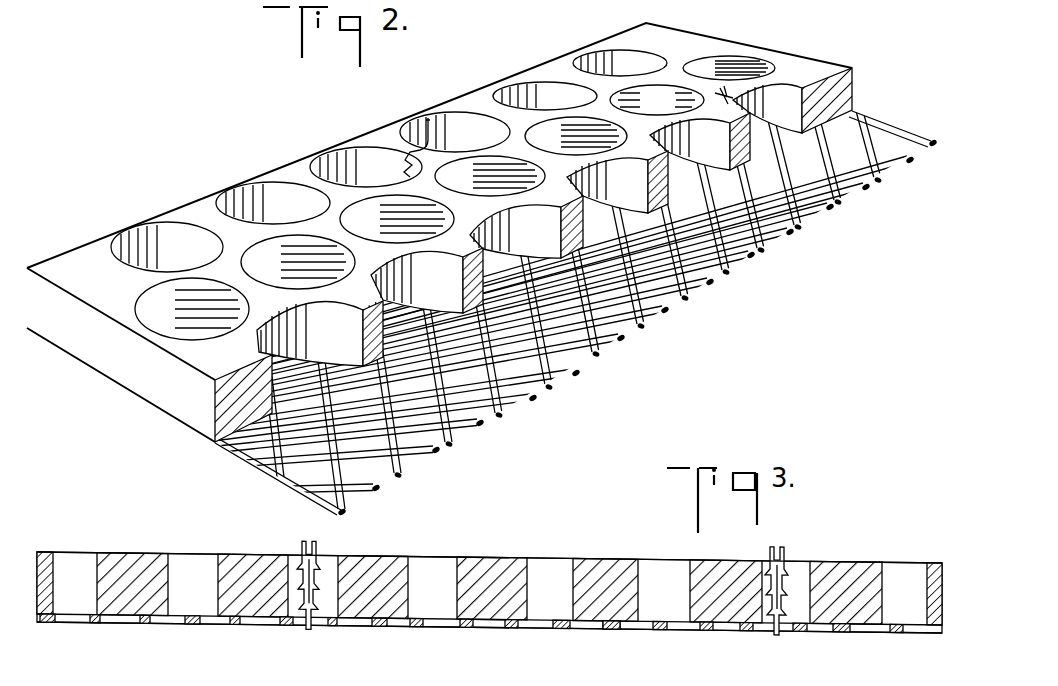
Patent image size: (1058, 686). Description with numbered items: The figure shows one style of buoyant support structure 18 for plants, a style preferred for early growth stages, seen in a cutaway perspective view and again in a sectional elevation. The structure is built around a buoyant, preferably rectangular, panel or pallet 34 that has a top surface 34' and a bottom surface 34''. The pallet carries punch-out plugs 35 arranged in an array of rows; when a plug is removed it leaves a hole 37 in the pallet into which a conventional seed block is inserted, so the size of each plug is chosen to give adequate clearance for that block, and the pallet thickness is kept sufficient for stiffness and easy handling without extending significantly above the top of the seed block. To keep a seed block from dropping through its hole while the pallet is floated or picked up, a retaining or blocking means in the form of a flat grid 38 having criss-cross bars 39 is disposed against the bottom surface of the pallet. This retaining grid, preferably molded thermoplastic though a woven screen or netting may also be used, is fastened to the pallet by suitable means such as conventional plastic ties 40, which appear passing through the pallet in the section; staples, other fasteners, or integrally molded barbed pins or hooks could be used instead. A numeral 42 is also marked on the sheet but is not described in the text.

In FIG. 2, the buoyant support structure 18 is at (198, 439).
In FIG. 3, the buoyant support structure 18 is at (617, 555).
In FIG. 2, the pallet 34 is at (448, 194).
In FIG. 3, the pallet 34 is at (489, 577).
In FIG. 2, the top surface 34' is at (121, 280).
In FIG. 3, the top surface 34' is at (97, 566).
In FIG. 2, the bottom surface 34'' is at (121, 385).
In FIG. 3, the bottom surface 34'' is at (489, 645).
In FIG. 2, the punch-out plugs 35 is at (727, 60).
In FIG. 2, the hole 37 is at (585, 53).
In FIG. 2, the flat grid 38 is at (285, 493).
In FIG. 3, the flat grid 38 is at (845, 640).
In FIG. 2, the criss-cross bars 39 is at (522, 402).
In FIG. 3, the criss-cross bars 39 is at (608, 627).
In FIG. 2, the plastic ties 40 is at (400, 165).
In FIG. 3, the plastic ties 40 is at (318, 567).
In FIG. 3, the element 42 is at (579, 680).